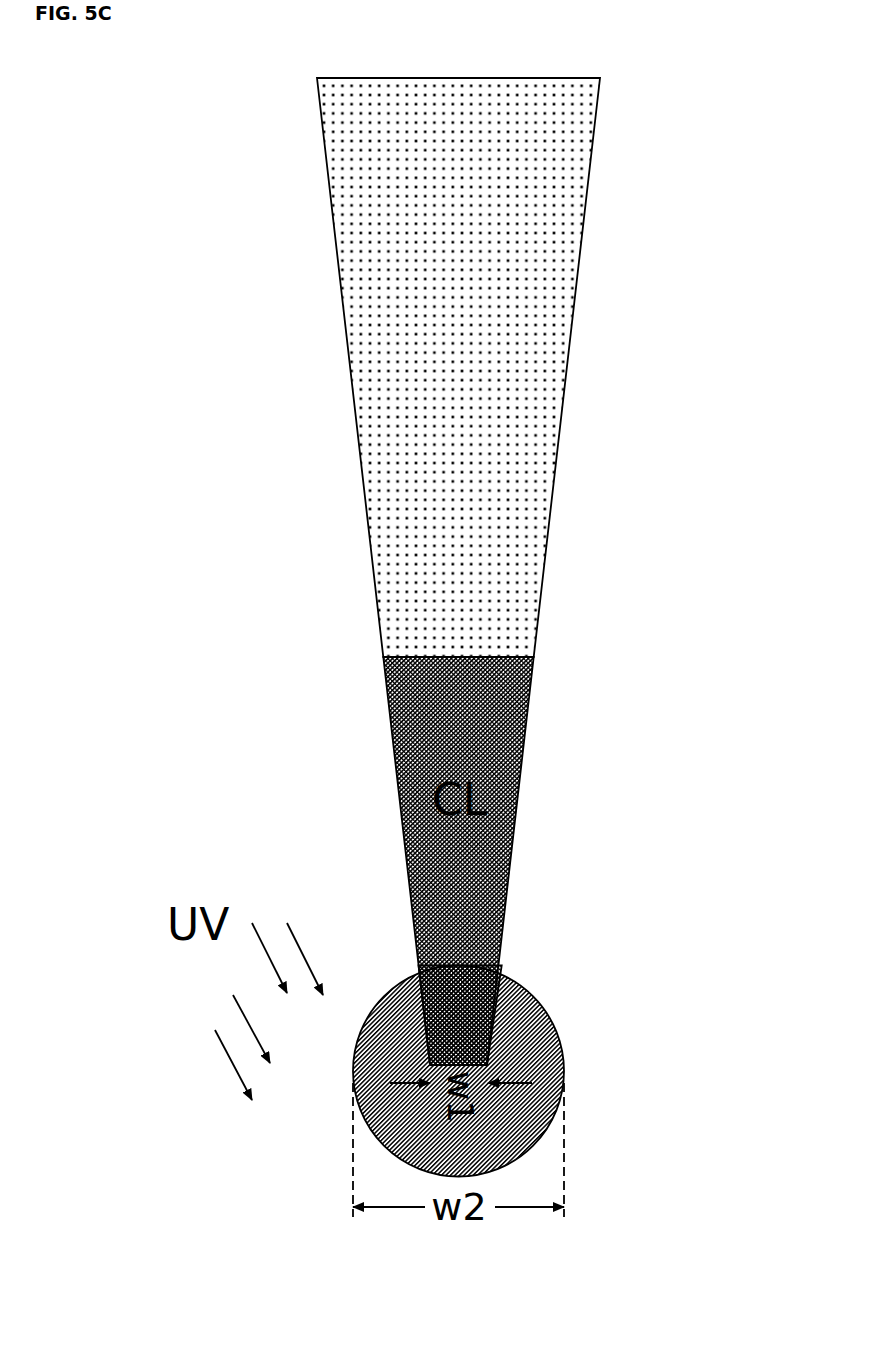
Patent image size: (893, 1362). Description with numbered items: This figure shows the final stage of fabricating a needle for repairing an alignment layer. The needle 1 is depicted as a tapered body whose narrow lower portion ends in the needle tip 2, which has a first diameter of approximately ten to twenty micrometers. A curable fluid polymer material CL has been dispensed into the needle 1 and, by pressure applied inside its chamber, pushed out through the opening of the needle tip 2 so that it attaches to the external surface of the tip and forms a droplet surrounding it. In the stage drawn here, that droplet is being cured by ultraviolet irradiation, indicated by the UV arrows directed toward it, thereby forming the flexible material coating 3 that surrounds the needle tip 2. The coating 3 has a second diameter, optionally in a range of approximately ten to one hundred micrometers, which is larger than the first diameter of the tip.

The needle 1 is at (588, 602).
The needle tip 2 is at (490, 1067).
The flexible material coating 3 is at (566, 1068).